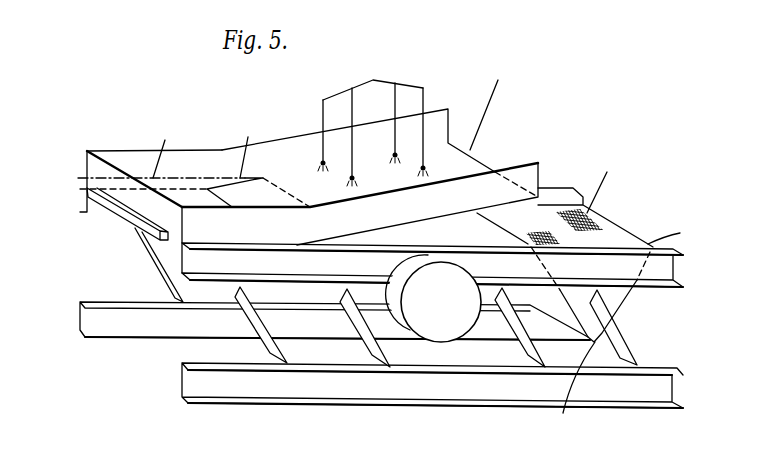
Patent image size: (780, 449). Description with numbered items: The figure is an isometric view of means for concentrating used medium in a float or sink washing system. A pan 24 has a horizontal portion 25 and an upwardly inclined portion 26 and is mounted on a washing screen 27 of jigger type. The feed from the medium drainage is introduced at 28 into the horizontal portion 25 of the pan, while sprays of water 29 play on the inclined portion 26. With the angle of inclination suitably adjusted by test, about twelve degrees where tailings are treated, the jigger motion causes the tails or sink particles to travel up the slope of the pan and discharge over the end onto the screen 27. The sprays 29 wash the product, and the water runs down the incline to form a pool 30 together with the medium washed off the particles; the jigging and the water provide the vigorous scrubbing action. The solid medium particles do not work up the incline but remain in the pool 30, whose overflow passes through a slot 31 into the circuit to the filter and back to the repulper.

The pan 24 is at (87, 150).
The horizontal portion 25 is at (193, 225).
The upwardly inclined portion 26 is at (497, 185).
The washing screen 27 is at (605, 272).
The feed 28 is at (143, 162).
The sprays of water 29 is at (373, 80).
The pool 30 is at (227, 197).
The slot 31 is at (118, 220).